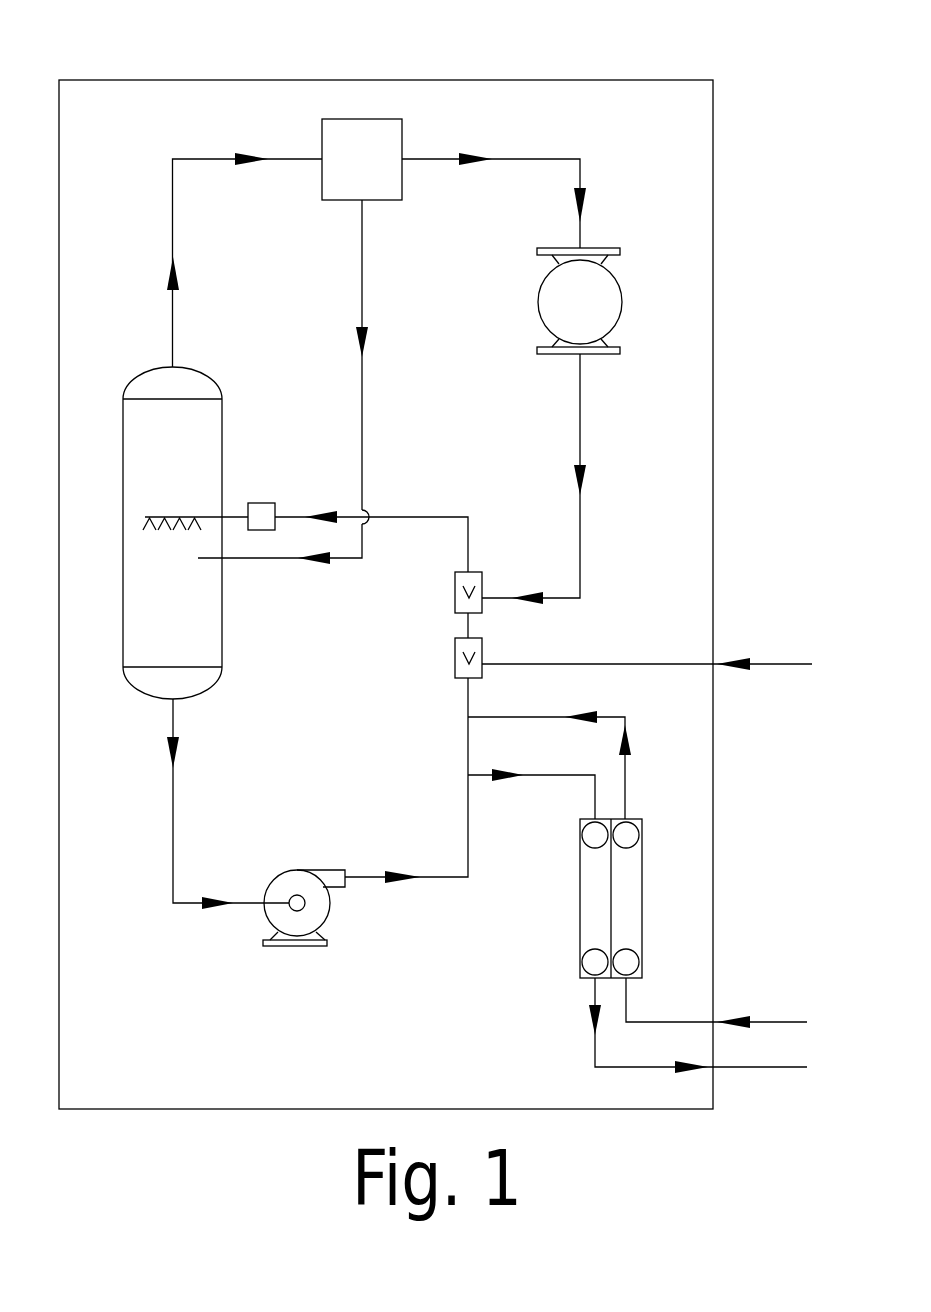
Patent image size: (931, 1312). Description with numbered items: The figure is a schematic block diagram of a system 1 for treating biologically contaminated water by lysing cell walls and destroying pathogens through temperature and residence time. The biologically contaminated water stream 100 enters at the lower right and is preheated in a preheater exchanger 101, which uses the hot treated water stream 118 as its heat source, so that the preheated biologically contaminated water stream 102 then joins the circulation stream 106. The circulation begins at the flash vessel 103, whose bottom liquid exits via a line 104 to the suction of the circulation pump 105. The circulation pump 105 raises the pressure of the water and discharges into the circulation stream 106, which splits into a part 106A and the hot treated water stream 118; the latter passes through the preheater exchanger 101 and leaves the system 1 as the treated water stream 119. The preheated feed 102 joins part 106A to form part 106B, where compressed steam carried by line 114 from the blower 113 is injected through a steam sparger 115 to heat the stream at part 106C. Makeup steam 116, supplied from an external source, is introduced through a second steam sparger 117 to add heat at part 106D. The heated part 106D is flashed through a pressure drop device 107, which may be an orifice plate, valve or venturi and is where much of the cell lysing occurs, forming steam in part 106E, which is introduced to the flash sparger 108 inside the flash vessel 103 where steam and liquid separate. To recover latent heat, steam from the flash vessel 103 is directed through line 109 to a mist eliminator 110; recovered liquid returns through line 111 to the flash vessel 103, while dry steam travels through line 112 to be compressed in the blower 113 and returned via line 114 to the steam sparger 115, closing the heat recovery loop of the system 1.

The system 1 is at (370, 80).
The biologically contaminated water stream 100 is at (719, 1003).
The preheater exchanger 101 is at (638, 898).
The preheated biologically contaminated water stream 102 is at (562, 755).
The flash vessel 103 is at (172, 533).
The line 104 is at (228, 804).
The circulation pump 105 is at (304, 908).
The circulation stream 106 is at (406, 829).
The part of main circulation stream 106A is at (436, 746).
The part of main circulation stream 106B is at (430, 697).
The part of main circulation stream 106C is at (425, 624).
The part of main circulation stream 106D is at (377, 527).
The part of main circulation stream 106E is at (232, 517).
The pressure drop device 107 is at (276, 505).
The flash sparger 108 is at (165, 513).
The line 109 is at (244, 244).
The mist eliminator 110 is at (362, 159).
The line 111 is at (311, 382).
The line 112 is at (494, 185).
The blower 113 is at (579, 301).
The line 114 is at (562, 479).
The steam sparger 115 is at (498, 582).
The makeup steam 116 is at (648, 654).
The steam sparger 117 is at (493, 653).
The hot treated water stream 118 is at (531, 780).
The treated water stream 119 is at (701, 1025).